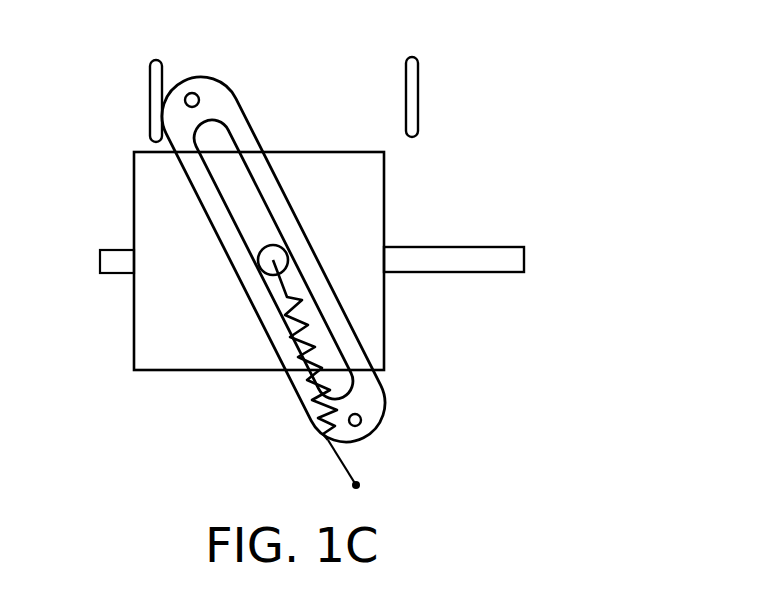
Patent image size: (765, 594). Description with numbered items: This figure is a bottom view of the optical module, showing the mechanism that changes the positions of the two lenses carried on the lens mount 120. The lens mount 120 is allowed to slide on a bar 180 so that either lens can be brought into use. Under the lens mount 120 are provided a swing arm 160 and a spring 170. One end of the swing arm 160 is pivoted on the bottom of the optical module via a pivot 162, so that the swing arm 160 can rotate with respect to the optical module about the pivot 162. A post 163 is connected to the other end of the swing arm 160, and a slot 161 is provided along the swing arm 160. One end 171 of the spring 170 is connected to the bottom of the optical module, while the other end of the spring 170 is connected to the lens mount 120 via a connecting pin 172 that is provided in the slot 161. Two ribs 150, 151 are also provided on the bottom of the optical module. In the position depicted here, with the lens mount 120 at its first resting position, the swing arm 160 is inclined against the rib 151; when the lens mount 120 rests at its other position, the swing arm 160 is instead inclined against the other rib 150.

The lens mount 120 is at (384, 195).
The rib 150 is at (418, 108).
The rib 151 is at (150, 106).
The swing arm 160 is at (264, 336).
The slot 161 is at (220, 140).
The pivot 162 is at (362, 422).
The post 163 is at (192, 93).
The spring 170 is at (327, 414).
The end of the spring 171 is at (360, 485).
The connecting pin 172 is at (262, 251).
The bar 180 is at (525, 258).